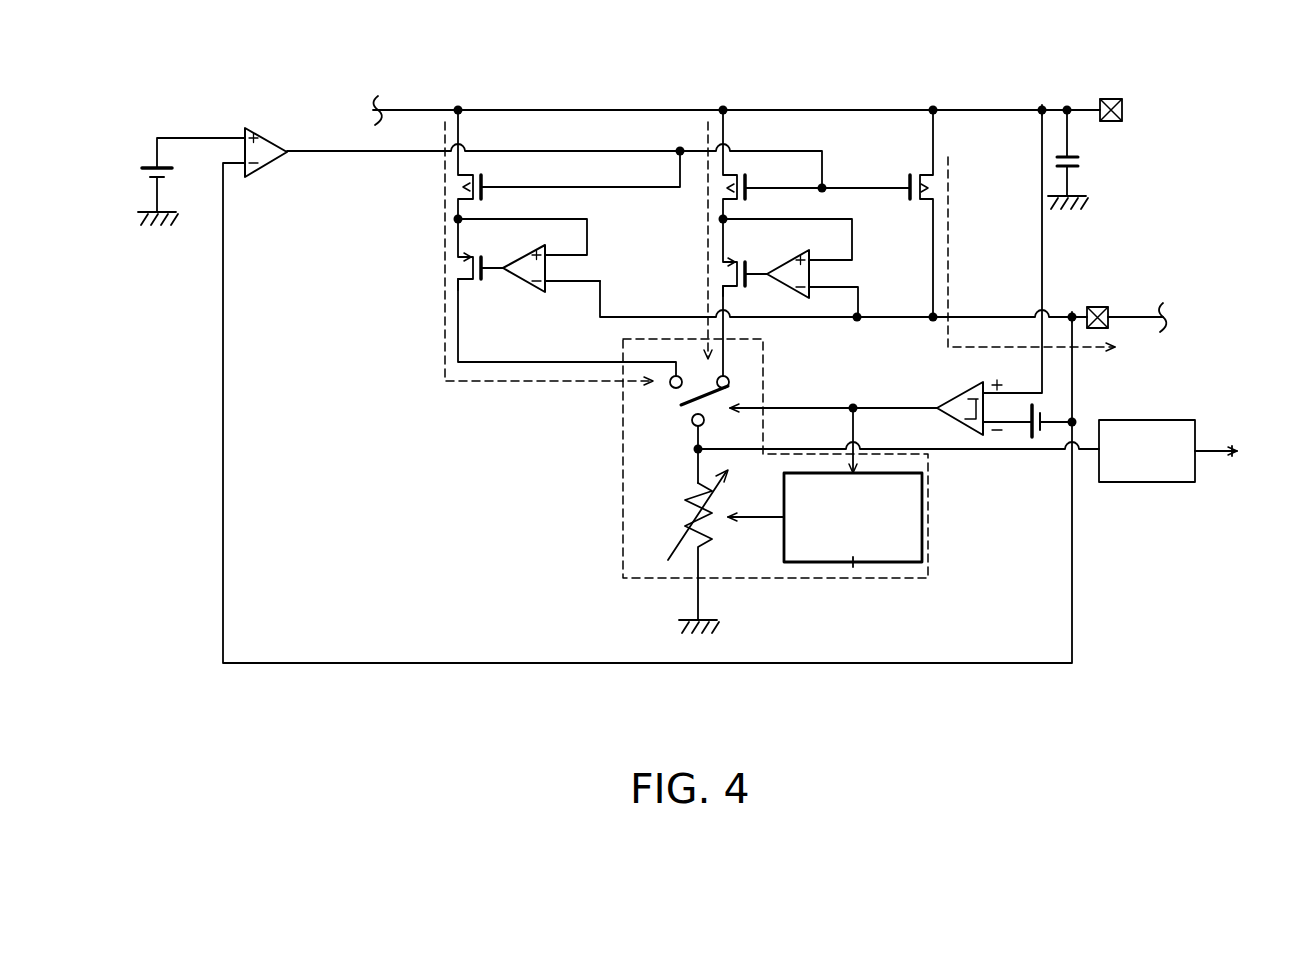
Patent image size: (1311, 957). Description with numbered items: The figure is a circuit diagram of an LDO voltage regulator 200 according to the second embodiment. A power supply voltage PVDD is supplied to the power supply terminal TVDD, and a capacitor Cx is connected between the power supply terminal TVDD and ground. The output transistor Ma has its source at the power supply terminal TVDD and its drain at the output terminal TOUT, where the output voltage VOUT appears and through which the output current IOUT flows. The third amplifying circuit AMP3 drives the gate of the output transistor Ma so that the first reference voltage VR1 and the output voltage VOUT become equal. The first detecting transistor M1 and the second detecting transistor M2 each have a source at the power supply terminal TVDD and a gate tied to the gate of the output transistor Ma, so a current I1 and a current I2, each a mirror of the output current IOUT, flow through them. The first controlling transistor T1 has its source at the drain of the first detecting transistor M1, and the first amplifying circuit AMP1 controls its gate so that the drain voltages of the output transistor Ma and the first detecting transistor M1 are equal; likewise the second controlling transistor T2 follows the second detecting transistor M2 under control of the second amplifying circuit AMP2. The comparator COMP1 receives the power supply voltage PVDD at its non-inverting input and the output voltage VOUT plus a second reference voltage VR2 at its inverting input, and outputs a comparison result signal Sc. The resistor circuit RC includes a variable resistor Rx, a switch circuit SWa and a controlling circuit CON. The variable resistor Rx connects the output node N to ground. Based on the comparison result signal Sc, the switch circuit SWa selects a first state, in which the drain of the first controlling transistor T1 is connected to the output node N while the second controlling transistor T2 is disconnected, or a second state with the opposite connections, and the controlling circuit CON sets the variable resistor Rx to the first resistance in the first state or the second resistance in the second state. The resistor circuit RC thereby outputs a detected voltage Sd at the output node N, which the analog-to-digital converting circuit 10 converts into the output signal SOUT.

The first reference voltage VR1 is at (150, 167).
The third amplifying circuit AMP3 is at (265, 128).
The second detecting transistor M2 is at (466, 173).
The second controlling transistor T2 is at (470, 256).
The current I2 is at (445, 282).
The second amplifying circuit AMP2 is at (524, 244).
The first detecting transistor M1 is at (730, 173).
The first controlling transistor T1 is at (732, 263).
The current I1 is at (708, 287).
The first amplifying circuit AMP1 is at (790, 250).
The output transistor Ma is at (925, 174).
The power supply voltage PVDD is at (1094, 93).
The power supply terminal TVDD is at (1122, 110).
The capacitor Cx is at (1080, 157).
The output voltage VOUT is at (1098, 299).
The output terminal TOUT is at (1107, 307).
The output current IOUT is at (1044, 270).
The comparator COMP1 is at (962, 394).
The comparison result signal Sc is at (833, 394).
The detected voltage Sd is at (878, 440).
The second reference voltage VR2 is at (1030, 440).
The switch circuit SWa is at (703, 395).
The output node N is at (692, 449).
The variable resistor Rx is at (685, 500).
The resistor circuit RC is at (928, 517).
The controlling circuit CON is at (853, 562).
The analog-to-digital converting circuit 10 is at (1151, 420).
The output signal SOUT is at (1271, 453).
The LDO voltage regulator 200 is at (723, 725).